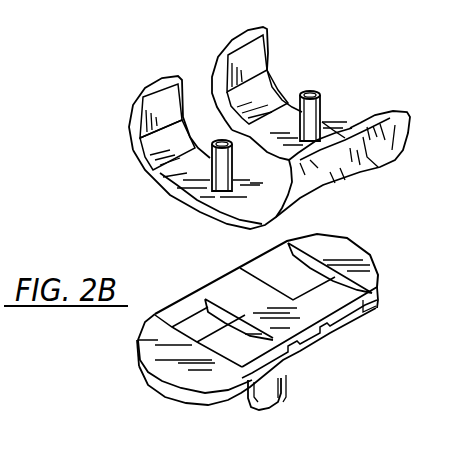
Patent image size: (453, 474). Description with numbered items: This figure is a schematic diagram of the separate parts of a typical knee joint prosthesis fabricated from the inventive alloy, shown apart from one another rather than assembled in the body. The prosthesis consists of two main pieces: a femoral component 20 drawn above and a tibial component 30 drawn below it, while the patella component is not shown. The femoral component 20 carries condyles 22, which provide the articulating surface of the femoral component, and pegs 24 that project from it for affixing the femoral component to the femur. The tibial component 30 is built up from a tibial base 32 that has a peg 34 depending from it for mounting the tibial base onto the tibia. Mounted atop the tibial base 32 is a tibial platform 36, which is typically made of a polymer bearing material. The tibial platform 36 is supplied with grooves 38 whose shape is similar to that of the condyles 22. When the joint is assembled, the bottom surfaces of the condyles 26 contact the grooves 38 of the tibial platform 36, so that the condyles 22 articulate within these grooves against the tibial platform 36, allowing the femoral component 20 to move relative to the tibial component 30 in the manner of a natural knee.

The femoral component 20 is at (329, 60).
The condyles 22 is at (278, 33).
The pegs 24 is at (323, 96).
The bottom surfaces of the condyles 26 is at (163, 193).
The tibial component 30 is at (353, 229).
The tibial base 32 is at (148, 396).
The peg 34 is at (287, 377).
The tibial platform 36 is at (138, 370).
The grooves 38 is at (183, 303).